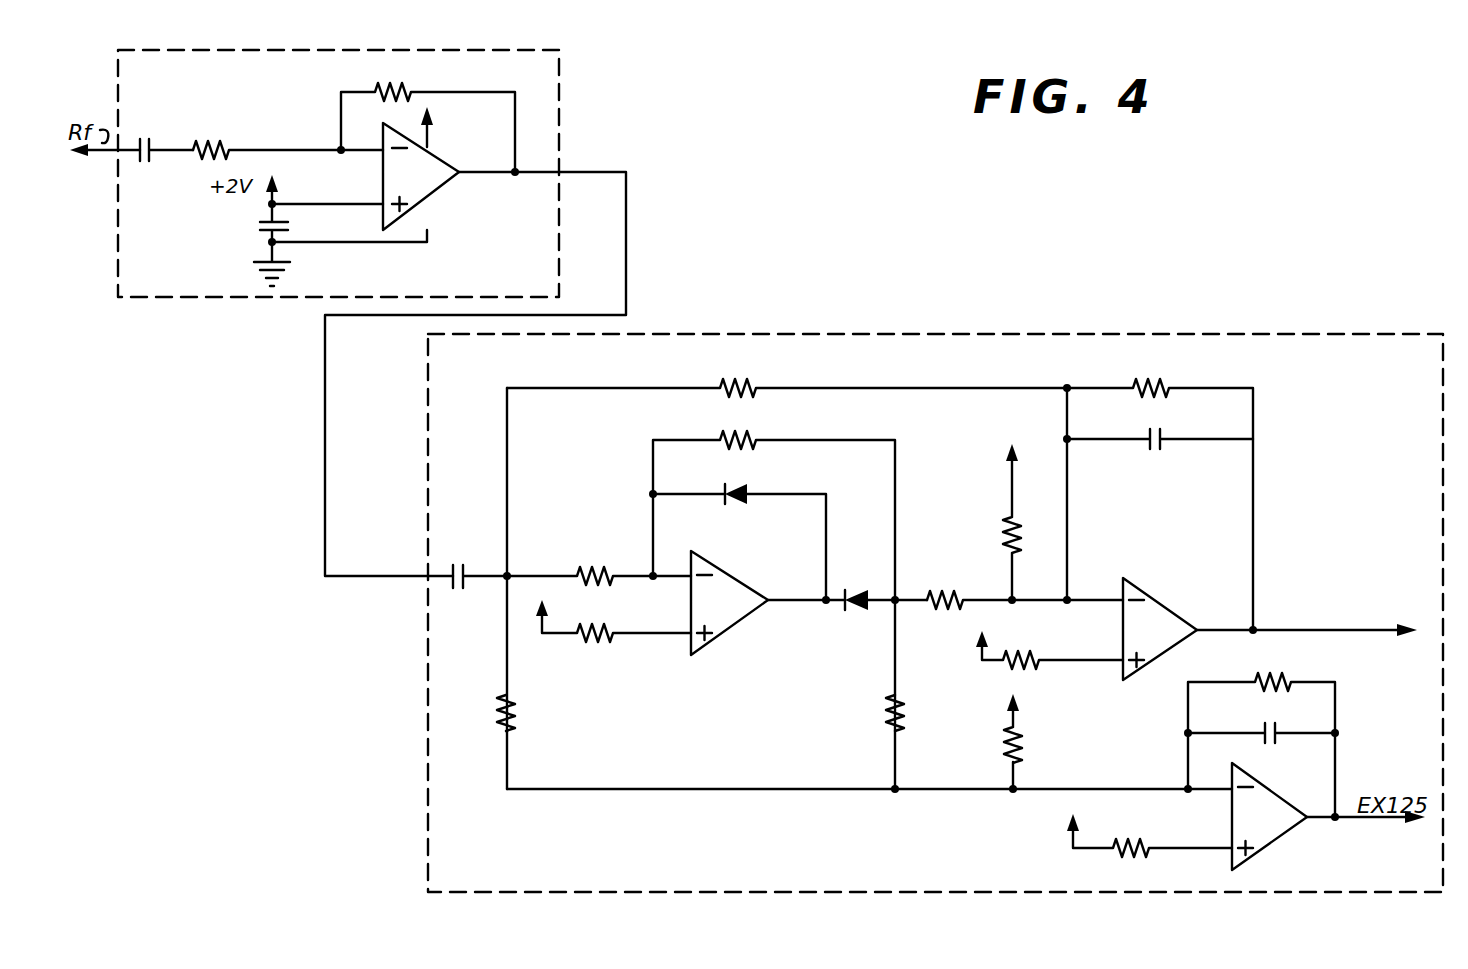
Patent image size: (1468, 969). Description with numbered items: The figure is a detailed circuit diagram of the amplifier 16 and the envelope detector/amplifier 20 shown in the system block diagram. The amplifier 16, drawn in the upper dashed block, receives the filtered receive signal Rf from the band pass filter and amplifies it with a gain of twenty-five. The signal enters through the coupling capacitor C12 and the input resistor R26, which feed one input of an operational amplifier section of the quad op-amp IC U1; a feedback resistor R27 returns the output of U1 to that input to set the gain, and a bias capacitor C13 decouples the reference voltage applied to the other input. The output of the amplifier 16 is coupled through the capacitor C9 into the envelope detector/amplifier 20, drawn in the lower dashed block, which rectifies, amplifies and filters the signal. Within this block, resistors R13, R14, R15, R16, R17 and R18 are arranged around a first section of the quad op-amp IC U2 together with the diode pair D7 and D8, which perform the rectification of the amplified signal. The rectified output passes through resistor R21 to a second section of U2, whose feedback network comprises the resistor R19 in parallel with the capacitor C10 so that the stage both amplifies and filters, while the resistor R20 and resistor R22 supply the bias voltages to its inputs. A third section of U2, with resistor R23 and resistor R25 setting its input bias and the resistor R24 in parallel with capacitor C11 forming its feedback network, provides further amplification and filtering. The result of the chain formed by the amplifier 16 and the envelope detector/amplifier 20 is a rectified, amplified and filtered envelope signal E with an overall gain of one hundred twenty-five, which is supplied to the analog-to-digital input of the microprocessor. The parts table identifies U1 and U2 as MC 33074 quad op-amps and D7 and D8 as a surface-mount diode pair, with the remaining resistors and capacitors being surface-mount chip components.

The amplifier 16 is at (580, 80).
The envelope detector/amplifier 20 is at (1342, 296).
The capacitor C12 is at (157, 140).
The resistor R26 is at (286, 138).
The resistor R27 is at (428, 117).
The quad op-amp IC U1 is at (413, 168).
The capacitor C13 is at (248, 223).
The capacitor C9 is at (474, 564).
The resistor R13 is at (787, 375).
The resistor R14 is at (774, 597).
The resistor R15 is at (599, 561).
The resistor R16 is at (600, 613).
The resistor R17 is at (532, 713).
The resistor R18 is at (860, 713).
The diode D7 is at (739, 534).
The diode D8 is at (884, 589).
The resistor R19 is at (1160, 491).
The capacitor C10 is at (1160, 427).
The resistor R20 is at (990, 509).
The resistor R21 is at (1023, 586).
The resistor R22 is at (1012, 647).
The resistor R23 is at (1011, 741).
The resistor R24 is at (1261, 733).
The resistor R25 is at (1112, 831).
The capacitor C11 is at (1261, 721).
The quad op-amp IC U2 is at (991, 710).